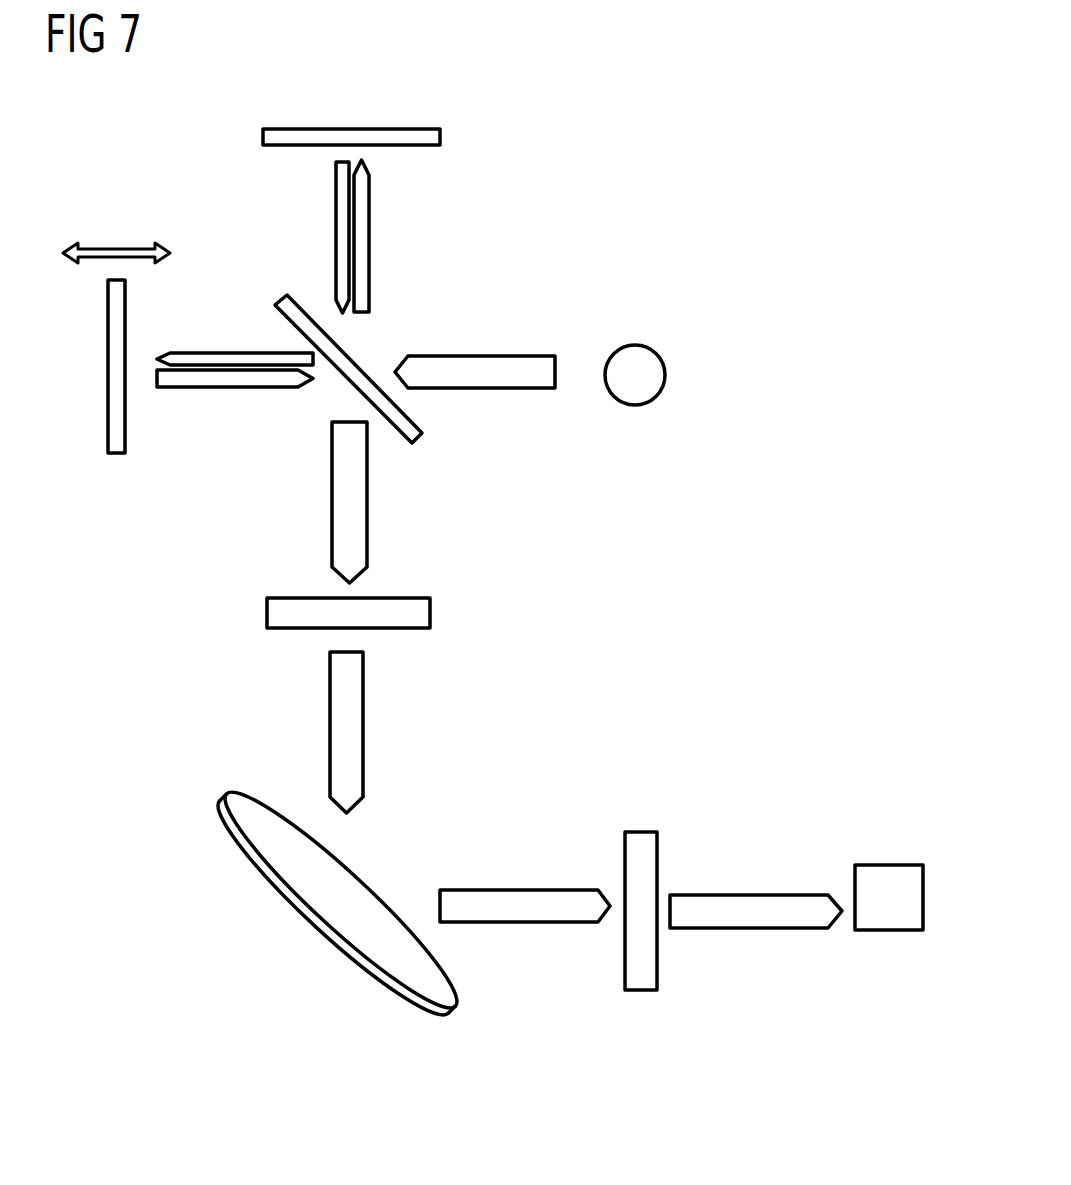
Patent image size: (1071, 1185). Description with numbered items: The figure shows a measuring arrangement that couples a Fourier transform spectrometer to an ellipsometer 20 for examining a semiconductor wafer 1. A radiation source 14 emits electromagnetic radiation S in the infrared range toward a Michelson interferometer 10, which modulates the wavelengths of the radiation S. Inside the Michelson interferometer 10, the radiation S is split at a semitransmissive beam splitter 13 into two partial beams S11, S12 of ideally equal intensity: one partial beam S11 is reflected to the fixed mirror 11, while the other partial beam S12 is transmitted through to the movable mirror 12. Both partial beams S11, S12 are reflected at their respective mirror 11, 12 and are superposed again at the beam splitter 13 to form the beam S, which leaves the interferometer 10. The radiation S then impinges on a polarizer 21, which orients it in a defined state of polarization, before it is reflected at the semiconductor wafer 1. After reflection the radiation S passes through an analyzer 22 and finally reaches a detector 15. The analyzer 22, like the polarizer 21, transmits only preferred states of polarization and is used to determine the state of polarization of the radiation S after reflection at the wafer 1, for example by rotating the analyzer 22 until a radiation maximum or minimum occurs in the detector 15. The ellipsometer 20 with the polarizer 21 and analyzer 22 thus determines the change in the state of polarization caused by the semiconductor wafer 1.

The semiconductor wafer 1 is at (338, 940).
The Michelson interferometer 10 is at (198, 153).
The fixed mirror 11 is at (440, 137).
The movable mirror 12 is at (108, 355).
The semitransmissive beam splitter 13 is at (418, 437).
The radiation source 14 is at (632, 345).
The detector 15 is at (892, 865).
The ellipsometer 20 is at (602, 713).
The polarizer 21 is at (430, 613).
The analyzer 22 is at (640, 832).
The electromagnetic radiation S is at (465, 356).
The partial beam S11 is at (362, 243).
The partial beam S12 is at (222, 360).